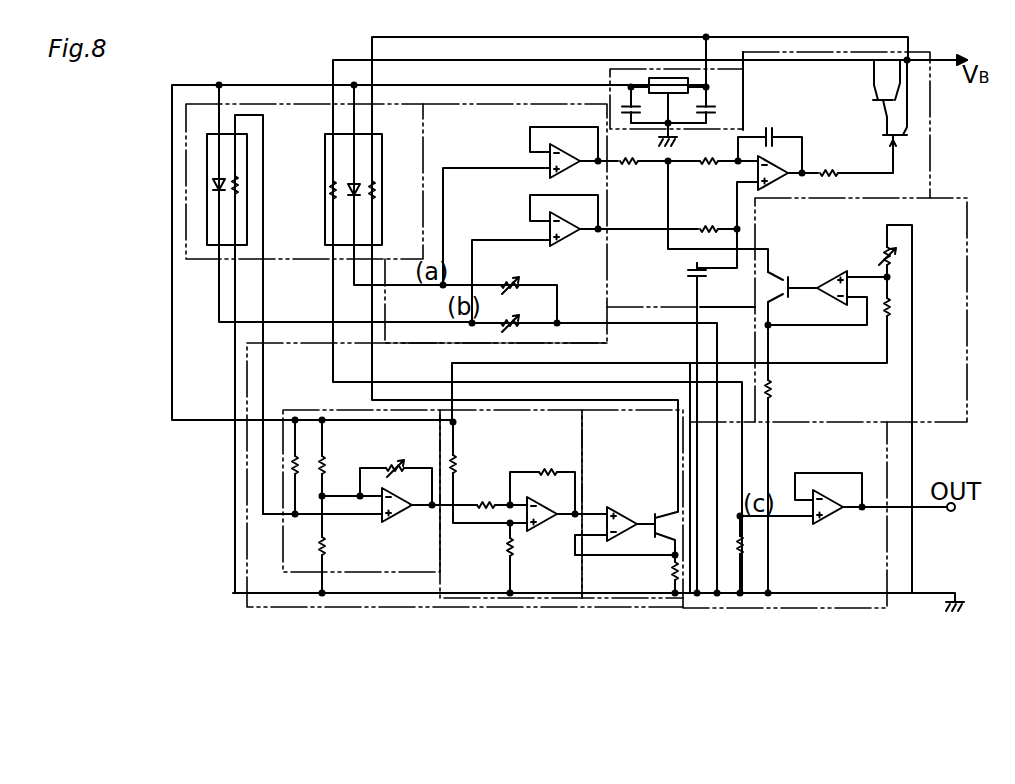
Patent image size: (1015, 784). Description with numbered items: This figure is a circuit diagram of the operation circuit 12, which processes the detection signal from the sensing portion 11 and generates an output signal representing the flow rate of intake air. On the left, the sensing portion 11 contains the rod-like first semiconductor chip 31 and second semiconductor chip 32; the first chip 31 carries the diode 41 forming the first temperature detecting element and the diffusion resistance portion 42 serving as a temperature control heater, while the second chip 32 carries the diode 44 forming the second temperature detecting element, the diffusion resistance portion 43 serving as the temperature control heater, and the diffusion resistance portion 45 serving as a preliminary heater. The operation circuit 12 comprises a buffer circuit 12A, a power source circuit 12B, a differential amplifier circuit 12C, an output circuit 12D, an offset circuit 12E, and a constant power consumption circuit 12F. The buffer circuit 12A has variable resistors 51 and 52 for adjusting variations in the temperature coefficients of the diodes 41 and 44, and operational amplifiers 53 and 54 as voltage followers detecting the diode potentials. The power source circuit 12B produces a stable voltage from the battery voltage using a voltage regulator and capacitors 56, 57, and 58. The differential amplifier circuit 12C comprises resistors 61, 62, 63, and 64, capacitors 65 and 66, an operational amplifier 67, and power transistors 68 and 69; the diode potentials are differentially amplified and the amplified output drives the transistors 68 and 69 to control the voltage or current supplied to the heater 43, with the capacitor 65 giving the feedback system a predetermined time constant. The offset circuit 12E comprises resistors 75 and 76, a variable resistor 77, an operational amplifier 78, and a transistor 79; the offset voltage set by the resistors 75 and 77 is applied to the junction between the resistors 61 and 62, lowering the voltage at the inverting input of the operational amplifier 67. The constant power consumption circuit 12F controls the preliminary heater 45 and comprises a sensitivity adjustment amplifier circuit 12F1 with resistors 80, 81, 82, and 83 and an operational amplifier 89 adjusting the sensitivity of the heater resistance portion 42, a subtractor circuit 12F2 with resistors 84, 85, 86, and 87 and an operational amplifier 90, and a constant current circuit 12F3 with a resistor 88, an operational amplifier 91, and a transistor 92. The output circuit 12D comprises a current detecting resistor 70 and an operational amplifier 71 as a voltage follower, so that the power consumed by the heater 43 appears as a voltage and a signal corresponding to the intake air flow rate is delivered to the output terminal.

The sensing portion 11 is at (258, 104).
The operation circuit 12 is at (944, 133).
The buffer circuit 12A is at (453, 104).
The power source circuit 12B is at (610, 75).
The differential amplifier circuit 12C is at (918, 53).
The output circuit 12D is at (857, 608).
The offset circuit 12E is at (935, 422).
The constant power consumption circuit 12F is at (468, 607).
The sensitivity adjustment amplifier circuit 12F1 is at (335, 572).
The subtractor circuit 12F2 is at (547, 598).
The constant current circuit 12F3 is at (655, 598).
The first semiconductor chip 31 is at (207, 140).
The second semiconductor chip 32 is at (325, 140).
The diode 41 is at (212, 184).
The diffusion resistance portion 42 is at (240, 184).
The diffusion resistance portion 43 is at (330, 192).
The diode 44 is at (350, 194).
The diffusion resistance portion 45 is at (376, 192).
The variable resistor 51 is at (512, 322).
The variable resistor 52 is at (505, 278).
The operational amplifier 53 is at (572, 166).
The operational amplifier 54 is at (567, 236).
The capacitor 56 is at (706, 110).
The capacitor 57 is at (636, 108).
The capacitor 58 is at (695, 95).
The resistor 61 is at (629, 170).
The resistor 62 is at (700, 160).
The resistor 63 is at (705, 228).
The resistor 64 is at (826, 173).
The capacitor 65 is at (775, 133).
The capacitor 66 is at (690, 276).
The operational amplifier 67 is at (768, 158).
The power transistor 68 is at (888, 138).
The power transistor 69 is at (878, 110).
The current detecting resistor 70 is at (748, 546).
The operational amplifier 71 is at (828, 523).
The resistor 75 is at (884, 318).
The resistor 76 is at (776, 388).
The variable resistor 77 is at (882, 250).
The operational amplifier 78 is at (847, 274).
The transistor 79 is at (790, 276).
The resistor 80 is at (292, 478).
The resistor 81 is at (326, 462).
The resistor 82 is at (326, 548).
The resistor 83 is at (397, 462).
The resistor 84 is at (458, 460).
The resistor 85 is at (482, 500).
The resistor 86 is at (515, 548).
The resistor 87 is at (548, 464).
The resistor 88 is at (668, 572).
The operational amplifier 89 is at (397, 522).
The operational amplifier 90 is at (538, 506).
The operational amplifier 91 is at (618, 502).
The transistor 92 is at (655, 516).